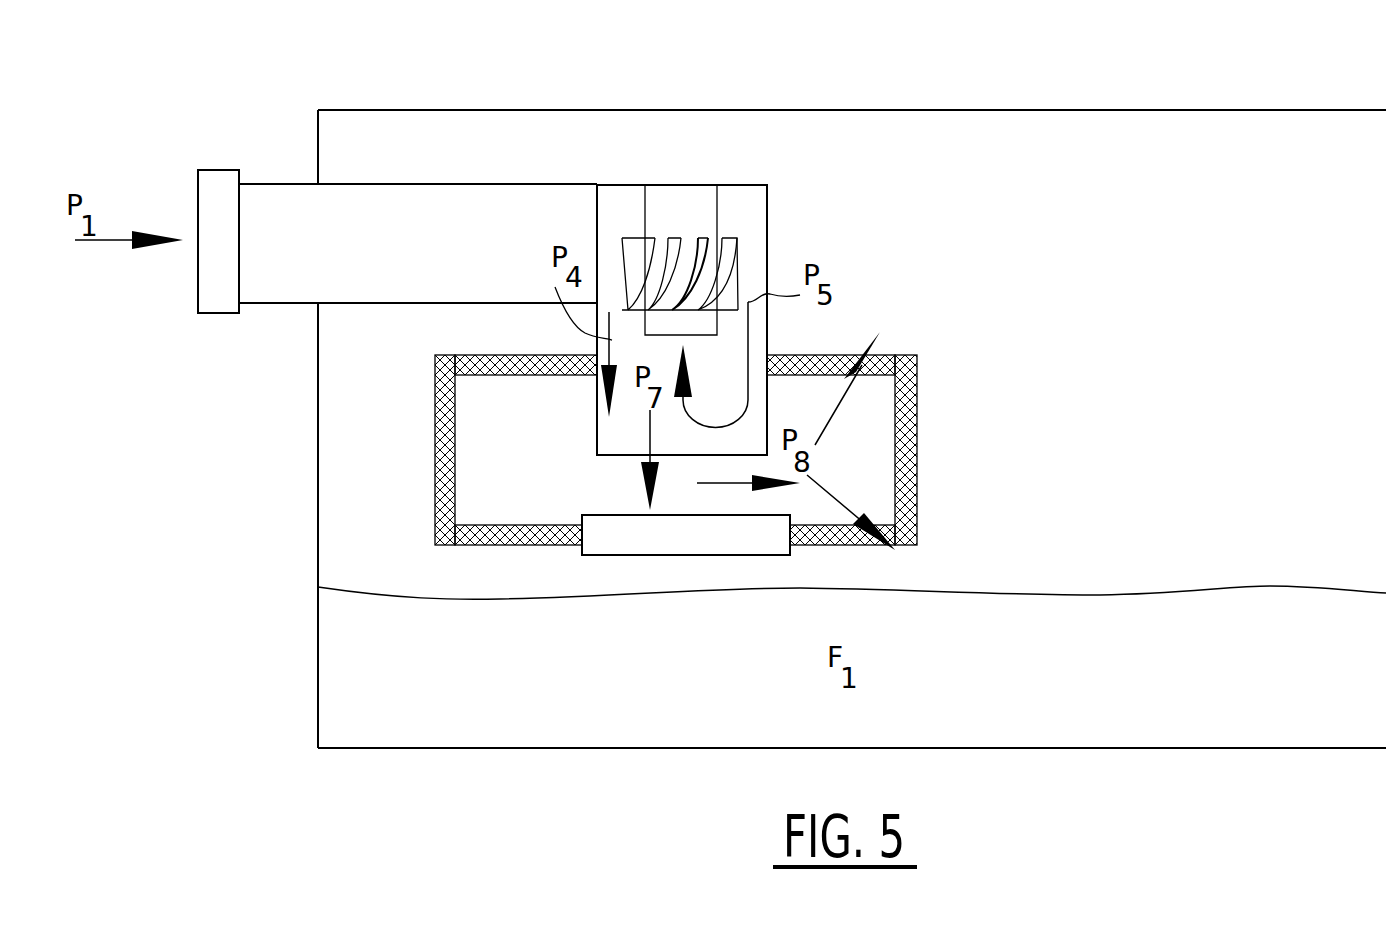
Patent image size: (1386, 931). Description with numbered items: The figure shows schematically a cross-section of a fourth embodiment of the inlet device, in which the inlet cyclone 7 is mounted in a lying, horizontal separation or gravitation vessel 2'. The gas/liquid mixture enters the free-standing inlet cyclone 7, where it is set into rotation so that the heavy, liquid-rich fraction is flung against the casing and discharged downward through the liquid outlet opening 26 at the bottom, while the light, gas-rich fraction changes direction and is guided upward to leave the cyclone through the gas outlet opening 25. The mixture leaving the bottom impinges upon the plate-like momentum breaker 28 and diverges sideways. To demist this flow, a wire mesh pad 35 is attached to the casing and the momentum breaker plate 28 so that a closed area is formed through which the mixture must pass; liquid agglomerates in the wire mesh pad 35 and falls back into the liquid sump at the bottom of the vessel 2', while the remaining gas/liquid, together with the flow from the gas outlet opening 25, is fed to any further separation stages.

The horizontal separation vessel 2' is at (852, 391).
The inlet cyclone 7 is at (440, 123).
The gas outlet opening 25 is at (692, 128).
The liquid outlet opening 26 is at (576, 496).
The momentum breaker plate 28 is at (676, 557).
The wire mesh pad 35 is at (435, 448).